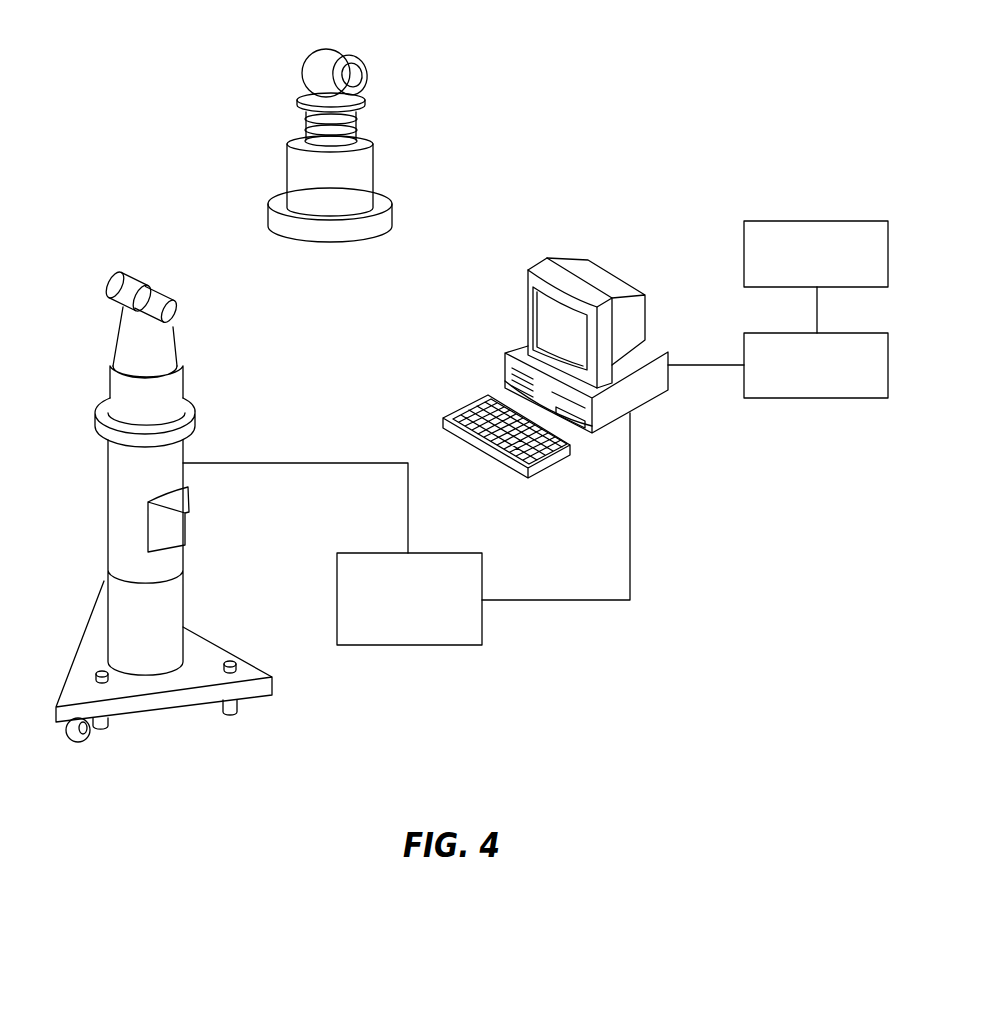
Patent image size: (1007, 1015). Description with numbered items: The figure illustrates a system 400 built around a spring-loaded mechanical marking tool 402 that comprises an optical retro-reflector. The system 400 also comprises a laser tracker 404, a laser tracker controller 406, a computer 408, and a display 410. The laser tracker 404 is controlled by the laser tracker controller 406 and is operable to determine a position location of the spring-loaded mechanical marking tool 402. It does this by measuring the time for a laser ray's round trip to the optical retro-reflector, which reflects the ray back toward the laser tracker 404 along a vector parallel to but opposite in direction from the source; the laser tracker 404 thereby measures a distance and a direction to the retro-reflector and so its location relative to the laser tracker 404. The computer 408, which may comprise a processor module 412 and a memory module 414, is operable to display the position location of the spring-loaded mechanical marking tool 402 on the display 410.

The system 400 is at (540, 33).
The spring-loaded mechanical marking tool 402 is at (287, 173).
The laser tracker 404 is at (108, 477).
The laser tracker controller 406 is at (337, 568).
The computer 408 is at (648, 404).
The display 410 is at (545, 320).
The processor module 412 is at (744, 347).
The memory module 414 is at (744, 238).